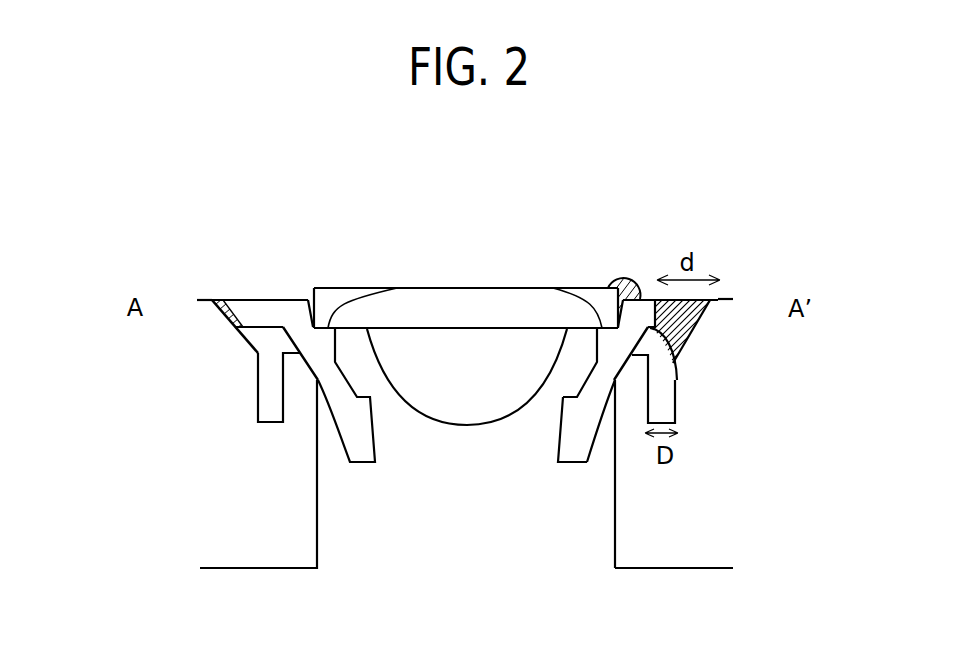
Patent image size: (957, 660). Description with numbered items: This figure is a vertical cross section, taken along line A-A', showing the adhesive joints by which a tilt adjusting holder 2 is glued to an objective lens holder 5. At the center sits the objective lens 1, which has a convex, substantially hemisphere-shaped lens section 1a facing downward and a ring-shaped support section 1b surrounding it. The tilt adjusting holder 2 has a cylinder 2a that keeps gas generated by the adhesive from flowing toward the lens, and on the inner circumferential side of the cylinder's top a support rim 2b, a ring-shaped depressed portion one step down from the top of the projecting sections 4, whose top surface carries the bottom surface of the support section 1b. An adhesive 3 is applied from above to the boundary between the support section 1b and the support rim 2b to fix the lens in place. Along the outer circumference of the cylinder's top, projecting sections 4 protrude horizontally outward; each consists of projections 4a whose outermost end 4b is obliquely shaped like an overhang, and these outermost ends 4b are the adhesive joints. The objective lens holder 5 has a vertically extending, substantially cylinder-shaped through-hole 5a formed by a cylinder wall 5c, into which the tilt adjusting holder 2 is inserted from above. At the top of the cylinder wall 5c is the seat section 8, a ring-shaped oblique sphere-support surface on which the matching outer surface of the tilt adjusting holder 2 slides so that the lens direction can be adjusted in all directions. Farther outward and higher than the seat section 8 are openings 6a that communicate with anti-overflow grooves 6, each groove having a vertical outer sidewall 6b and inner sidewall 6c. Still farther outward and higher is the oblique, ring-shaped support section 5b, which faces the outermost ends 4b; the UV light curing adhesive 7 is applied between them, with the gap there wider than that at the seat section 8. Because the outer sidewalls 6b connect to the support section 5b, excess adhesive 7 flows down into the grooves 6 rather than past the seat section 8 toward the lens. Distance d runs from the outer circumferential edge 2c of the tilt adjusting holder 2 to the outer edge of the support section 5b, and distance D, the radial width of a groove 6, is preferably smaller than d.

The objective lens 1 is at (502, 305).
The lens section 1a is at (443, 390).
The support section 1b is at (320, 308).
The tilt adjusting holder 2 is at (570, 452).
The cylinder 2a is at (567, 420).
The support rim 2b is at (397, 288).
The outer circumferential edge 2c is at (680, 303).
The adhesive 3 is at (621, 284).
The projecting section 4 is at (283, 315).
The projection 4a is at (252, 308).
The outermost end 4b is at (240, 330).
The objective lens holder 5 is at (466, 474).
The through-hole 5a is at (447, 547).
The support section 5b is at (227, 316).
The cylinder wall 5c is at (613, 515).
The anti-overflow groove 6 is at (272, 414).
The opening 6a is at (268, 365).
The outer sidewall 6b is at (678, 378).
The inner sidewall 6c is at (675, 393).
The adhesive 7 is at (220, 302).
The seat section 8 is at (308, 368).